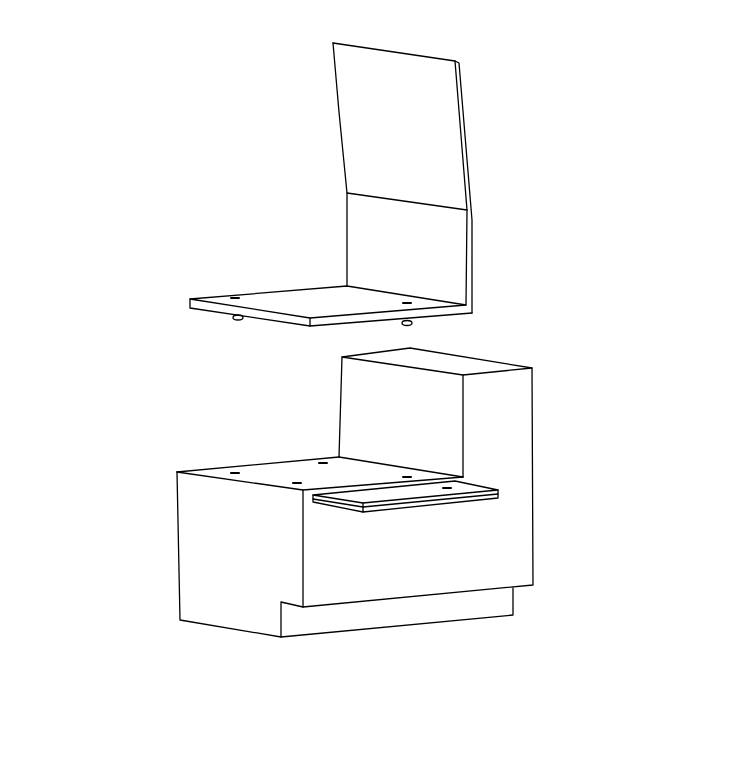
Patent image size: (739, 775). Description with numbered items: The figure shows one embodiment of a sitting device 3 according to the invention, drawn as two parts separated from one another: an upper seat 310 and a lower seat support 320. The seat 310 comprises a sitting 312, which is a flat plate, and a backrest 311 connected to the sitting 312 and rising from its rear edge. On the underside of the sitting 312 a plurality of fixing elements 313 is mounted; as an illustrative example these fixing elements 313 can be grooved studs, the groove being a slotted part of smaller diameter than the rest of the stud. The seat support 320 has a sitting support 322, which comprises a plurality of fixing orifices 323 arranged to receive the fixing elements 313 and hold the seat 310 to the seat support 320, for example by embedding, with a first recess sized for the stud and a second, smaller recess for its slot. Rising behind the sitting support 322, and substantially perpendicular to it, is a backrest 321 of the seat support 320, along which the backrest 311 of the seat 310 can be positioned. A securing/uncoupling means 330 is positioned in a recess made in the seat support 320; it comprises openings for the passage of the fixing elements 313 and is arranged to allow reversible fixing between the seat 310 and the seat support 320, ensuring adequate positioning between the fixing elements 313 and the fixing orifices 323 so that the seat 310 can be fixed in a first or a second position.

The sitting device 3 is at (113, 87).
The seat 310 is at (489, 188).
The backrest 311 is at (463, 67).
The sitting 312 is at (302, 302).
The fixing elements 313 is at (233, 317).
The seat support 320 is at (550, 403).
The backrest of the seat support 321 is at (370, 390).
The sitting support 322 is at (280, 468).
The fixing orifices 323 is at (222, 468).
The securing/uncoupling means 330 is at (500, 498).